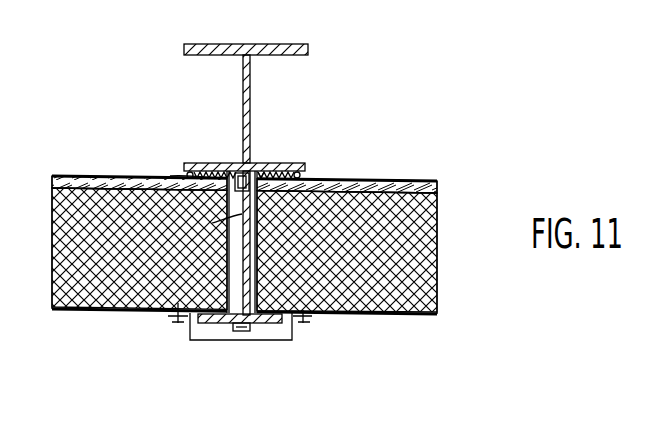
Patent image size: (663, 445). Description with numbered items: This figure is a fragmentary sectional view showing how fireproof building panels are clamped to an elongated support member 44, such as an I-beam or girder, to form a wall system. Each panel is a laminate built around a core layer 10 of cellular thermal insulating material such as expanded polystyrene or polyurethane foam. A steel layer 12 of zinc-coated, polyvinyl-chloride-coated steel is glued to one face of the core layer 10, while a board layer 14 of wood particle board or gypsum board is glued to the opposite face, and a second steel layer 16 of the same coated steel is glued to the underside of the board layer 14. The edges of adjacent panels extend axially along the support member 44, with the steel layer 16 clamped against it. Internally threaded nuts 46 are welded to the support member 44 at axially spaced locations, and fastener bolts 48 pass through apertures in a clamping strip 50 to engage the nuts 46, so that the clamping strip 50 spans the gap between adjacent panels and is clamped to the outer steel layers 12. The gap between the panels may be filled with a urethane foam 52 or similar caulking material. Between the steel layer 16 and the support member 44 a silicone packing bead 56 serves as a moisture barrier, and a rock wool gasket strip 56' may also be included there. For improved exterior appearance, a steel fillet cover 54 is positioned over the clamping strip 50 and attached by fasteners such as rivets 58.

The core layer 10 is at (376, 306).
The steel layer 12 is at (428, 316).
The board layer 14 is at (386, 182).
The steel layer 16 is at (340, 182).
The support member 44 is at (274, 52).
The internally threaded nut 46 is at (248, 168).
The fastener bolt 48 is at (180, 179).
The clamping strip 50 is at (270, 324).
The urethane foam 52 is at (258, 325).
The steel fillet cover 54 is at (200, 342).
The silicone packing bead 56 is at (232, 141).
The rock wool gasket strip 56' is at (239, 141).
The rivet 58 is at (305, 324).